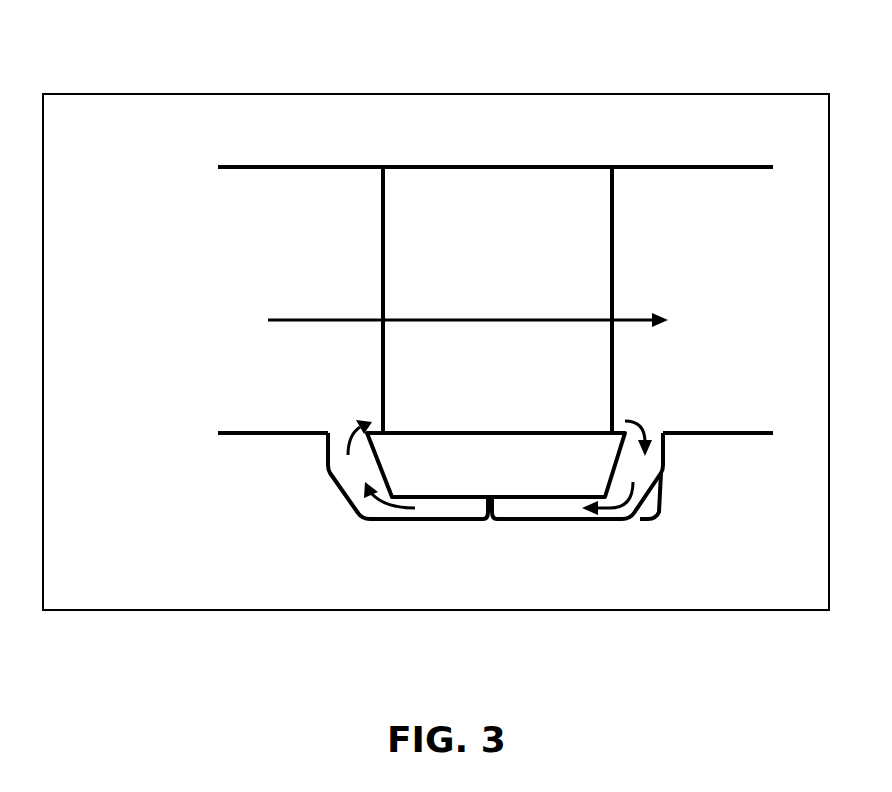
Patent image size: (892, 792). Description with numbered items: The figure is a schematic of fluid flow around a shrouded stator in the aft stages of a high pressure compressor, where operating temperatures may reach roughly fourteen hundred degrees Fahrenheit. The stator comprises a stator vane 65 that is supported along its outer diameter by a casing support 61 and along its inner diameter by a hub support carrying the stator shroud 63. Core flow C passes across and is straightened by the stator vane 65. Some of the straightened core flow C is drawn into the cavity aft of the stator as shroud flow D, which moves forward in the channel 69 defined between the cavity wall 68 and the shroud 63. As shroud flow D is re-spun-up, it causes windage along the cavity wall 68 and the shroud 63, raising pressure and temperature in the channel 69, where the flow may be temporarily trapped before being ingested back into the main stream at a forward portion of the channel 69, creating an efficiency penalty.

The casing support 61 is at (510, 118).
The stator vane 65 is at (597, 222).
The channel 69 is at (643, 473).
The cavity wall 68 is at (607, 520).
The stator shroud 63 is at (533, 480).
The core flow C is at (296, 318).
The shroud flow D is at (642, 420).